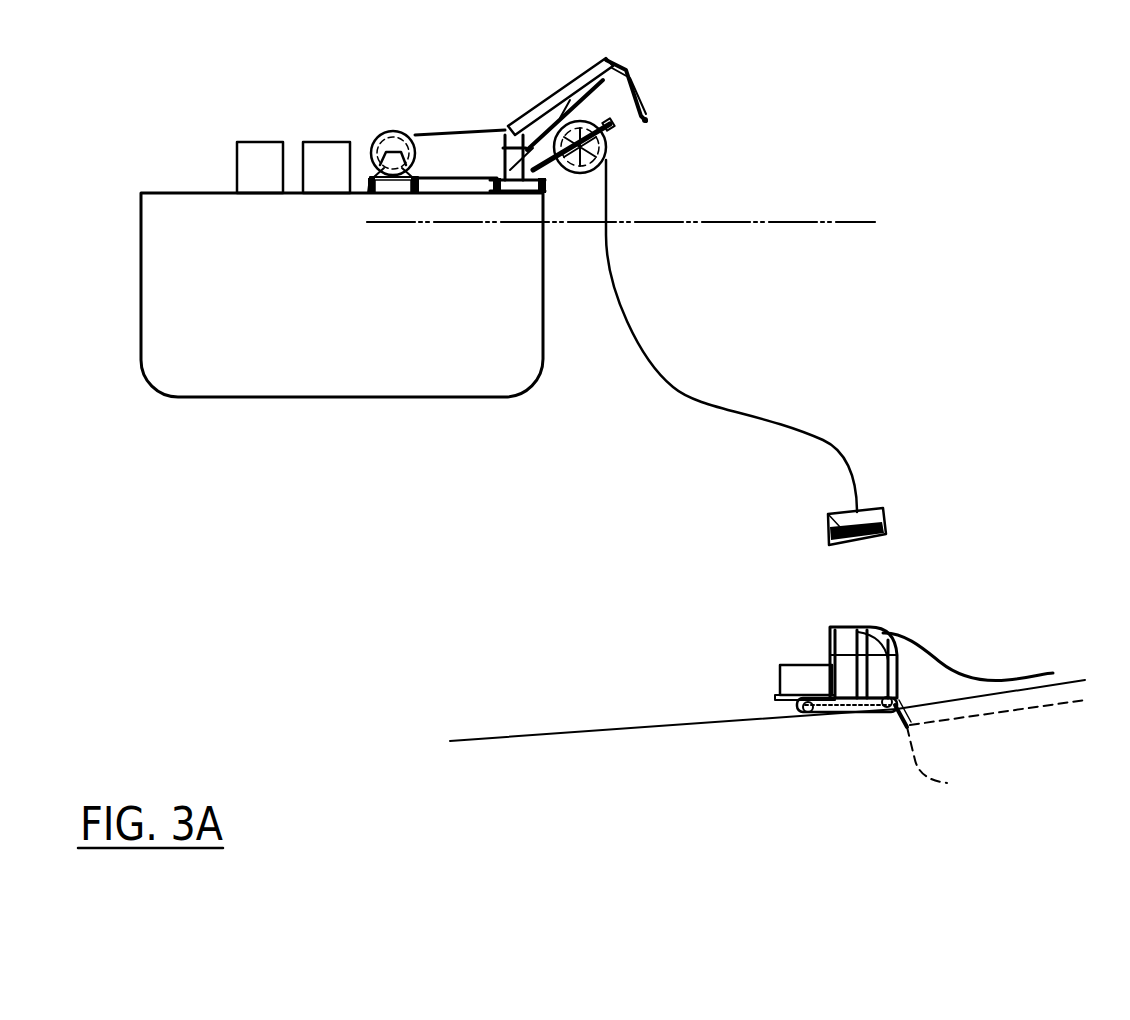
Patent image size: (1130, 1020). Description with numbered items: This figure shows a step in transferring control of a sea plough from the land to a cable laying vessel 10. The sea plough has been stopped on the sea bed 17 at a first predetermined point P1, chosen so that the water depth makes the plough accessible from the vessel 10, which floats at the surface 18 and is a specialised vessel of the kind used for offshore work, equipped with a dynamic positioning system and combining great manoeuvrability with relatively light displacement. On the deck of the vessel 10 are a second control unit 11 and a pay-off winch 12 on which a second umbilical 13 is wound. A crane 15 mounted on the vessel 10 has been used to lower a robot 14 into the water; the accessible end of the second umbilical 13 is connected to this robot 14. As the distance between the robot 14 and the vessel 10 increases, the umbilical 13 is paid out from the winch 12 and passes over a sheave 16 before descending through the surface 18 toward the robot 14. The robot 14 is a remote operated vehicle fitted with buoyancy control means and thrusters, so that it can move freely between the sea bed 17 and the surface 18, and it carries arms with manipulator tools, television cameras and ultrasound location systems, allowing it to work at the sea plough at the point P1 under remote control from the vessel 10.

The cable laying vessel 10 is at (177, 285).
The second control unit 11 is at (237, 129).
The pay-off winch 12 is at (388, 134).
The second umbilical 13 is at (630, 324).
The robot 14 is at (898, 512).
The crane 15 is at (572, 82).
The sheave 16 is at (615, 162).
The sea bed 17 is at (538, 738).
The surface 18 is at (785, 220).
The first predetermined point P1 is at (952, 767).